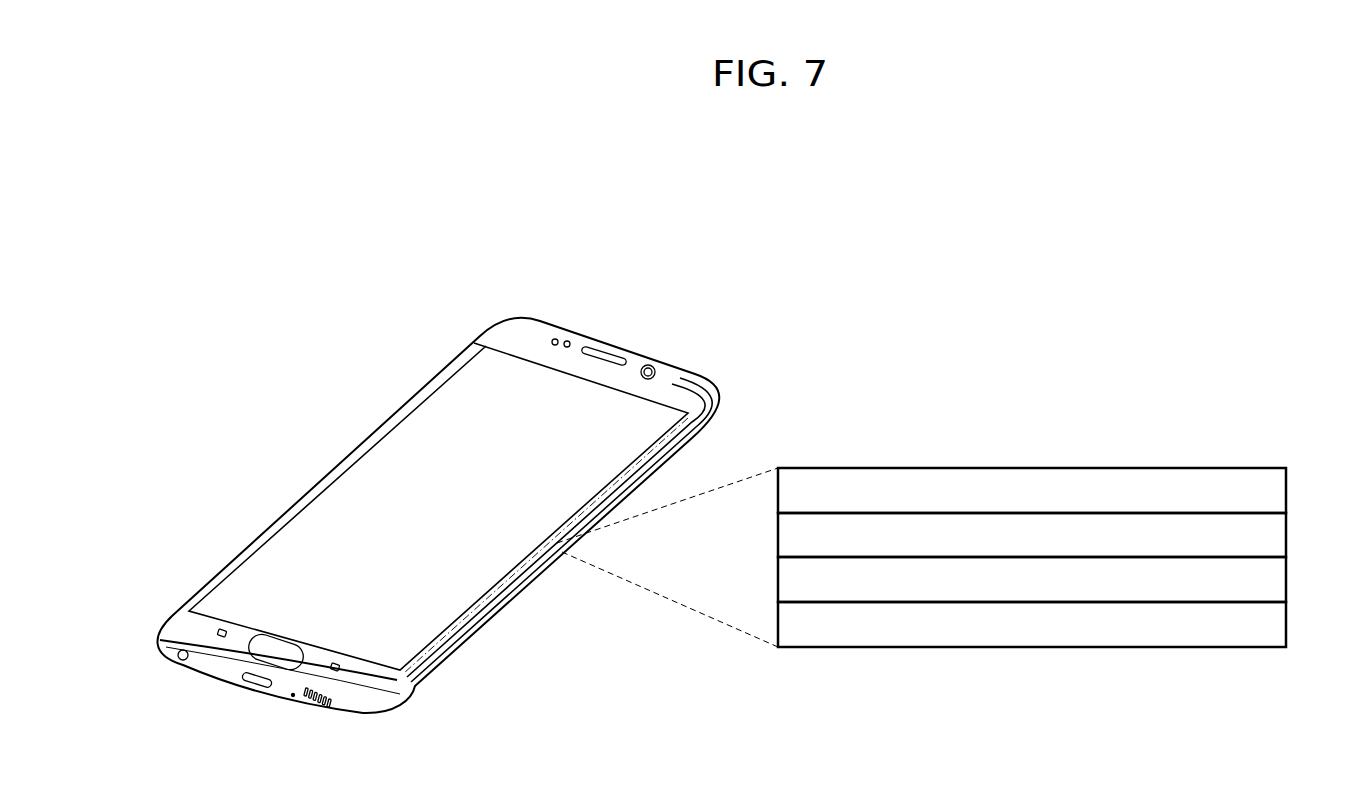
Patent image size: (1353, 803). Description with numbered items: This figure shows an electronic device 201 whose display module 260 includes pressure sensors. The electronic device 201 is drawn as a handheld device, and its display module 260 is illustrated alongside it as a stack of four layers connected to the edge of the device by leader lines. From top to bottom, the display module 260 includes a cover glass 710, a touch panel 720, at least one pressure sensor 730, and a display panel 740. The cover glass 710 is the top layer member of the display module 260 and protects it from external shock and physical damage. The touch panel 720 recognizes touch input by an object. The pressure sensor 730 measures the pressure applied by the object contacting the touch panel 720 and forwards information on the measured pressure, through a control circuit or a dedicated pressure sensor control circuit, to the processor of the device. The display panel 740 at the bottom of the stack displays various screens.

The electronic device 201 is at (723, 387).
The display module 260 is at (463, 637).
The cover glass 710 is at (1286, 488).
The touch panel 720 is at (1286, 532).
The pressure sensor 730 is at (1286, 577).
The display panel 740 is at (1286, 623).